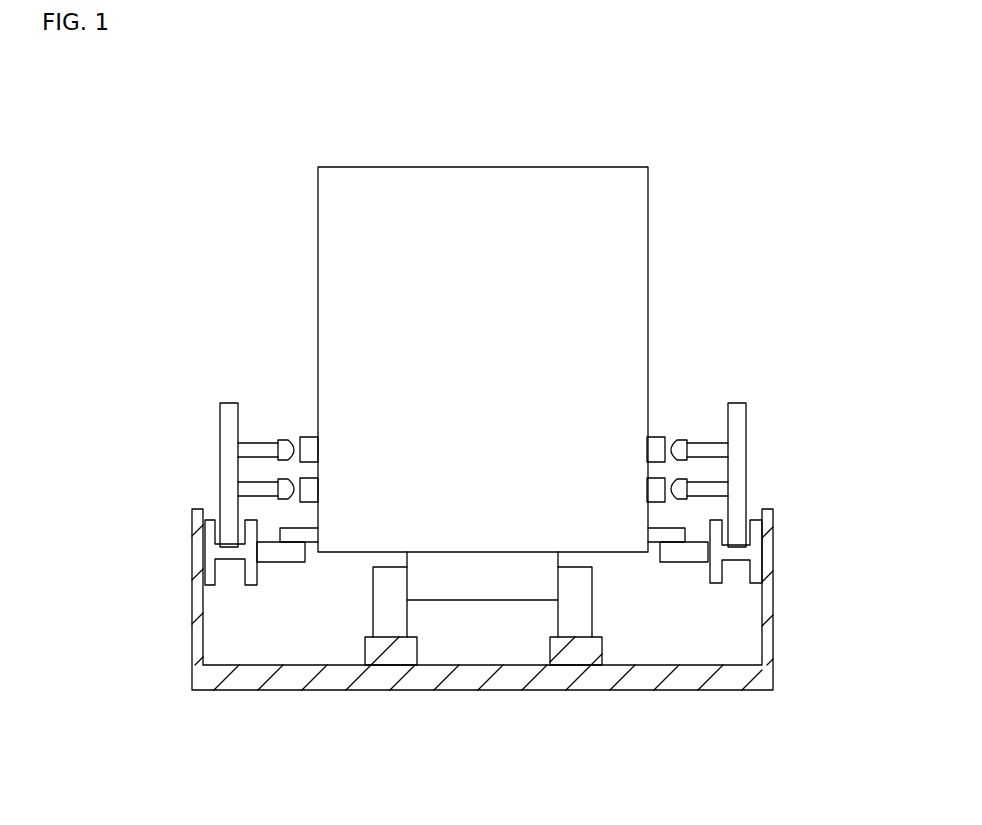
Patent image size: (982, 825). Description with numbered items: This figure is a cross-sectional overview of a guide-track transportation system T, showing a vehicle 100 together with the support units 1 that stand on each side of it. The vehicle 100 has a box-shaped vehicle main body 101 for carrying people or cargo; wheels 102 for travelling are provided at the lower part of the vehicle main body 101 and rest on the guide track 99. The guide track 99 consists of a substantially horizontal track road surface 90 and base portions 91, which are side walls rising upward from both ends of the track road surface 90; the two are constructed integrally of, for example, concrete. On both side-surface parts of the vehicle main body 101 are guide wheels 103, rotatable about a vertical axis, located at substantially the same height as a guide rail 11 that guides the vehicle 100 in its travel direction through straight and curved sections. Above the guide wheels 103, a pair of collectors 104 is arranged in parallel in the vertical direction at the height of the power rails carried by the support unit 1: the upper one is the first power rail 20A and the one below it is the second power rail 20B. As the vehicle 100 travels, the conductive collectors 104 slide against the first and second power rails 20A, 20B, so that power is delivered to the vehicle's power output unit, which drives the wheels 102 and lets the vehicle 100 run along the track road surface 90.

The guide-track transportation system T is at (217, 136).
The support unit 1 is at (241, 373).
The vehicle 100 is at (539, 151).
The vehicle main body 101 is at (615, 173).
The wheels 102 is at (386, 597).
The guide wheels 103 is at (280, 562).
The collectors 104 is at (310, 490).
The first power rail 20A is at (283, 445).
The second power rail 20B is at (283, 488).
The guide rail 11 is at (247, 585).
The base portion 91 is at (192, 565).
The track road surface 90 is at (498, 668).
The guide track 99 is at (716, 680).